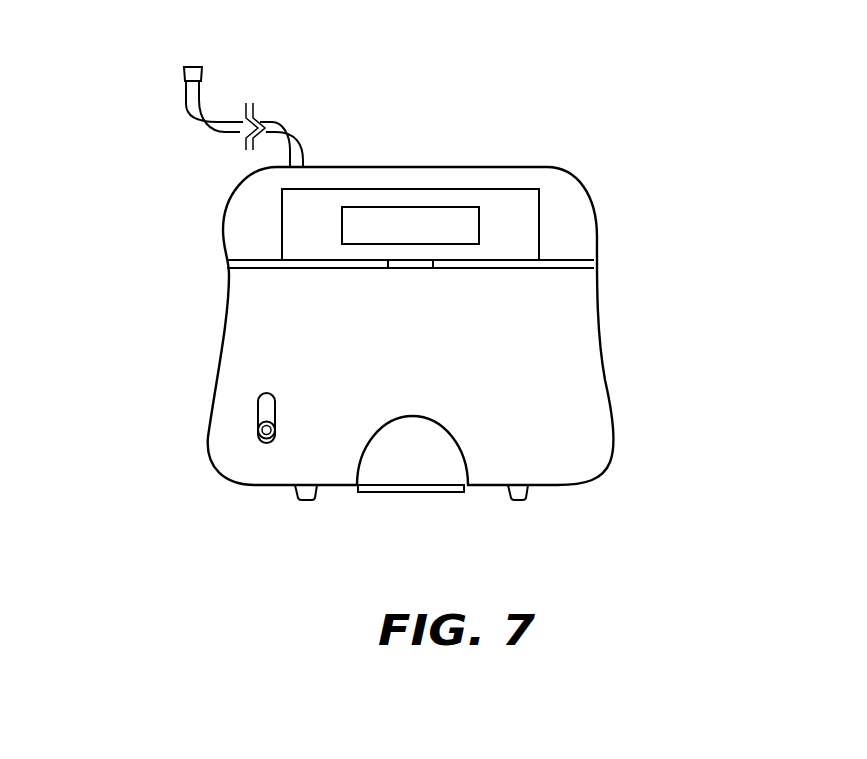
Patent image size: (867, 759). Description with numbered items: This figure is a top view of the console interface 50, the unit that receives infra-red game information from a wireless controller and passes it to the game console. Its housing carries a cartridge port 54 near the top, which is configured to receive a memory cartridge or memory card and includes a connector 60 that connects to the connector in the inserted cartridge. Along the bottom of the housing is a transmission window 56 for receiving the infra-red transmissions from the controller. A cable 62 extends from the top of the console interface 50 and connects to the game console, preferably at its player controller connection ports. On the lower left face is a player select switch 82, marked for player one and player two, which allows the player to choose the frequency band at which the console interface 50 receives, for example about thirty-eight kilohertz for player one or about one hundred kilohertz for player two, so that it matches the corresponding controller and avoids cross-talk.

The console interface 50 is at (616, 140).
The cartridge port 54 is at (523, 223).
The transmission window 56 is at (405, 492).
The connector 60 is at (387, 218).
The cable 62 is at (188, 121).
The player select switch 82 is at (258, 417).